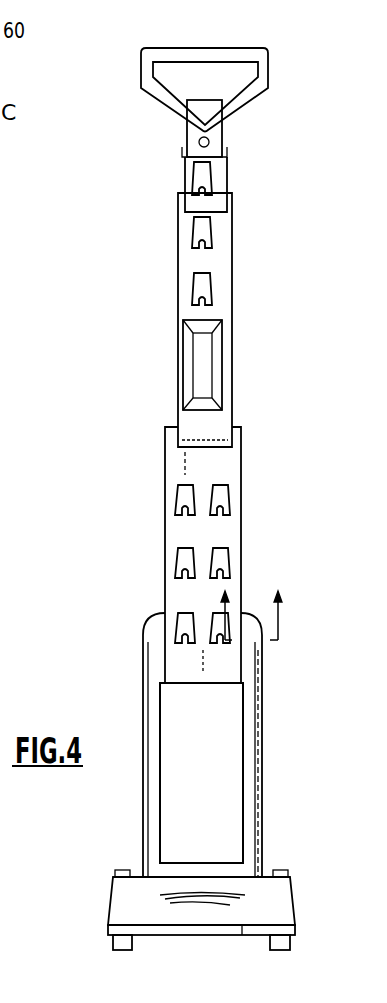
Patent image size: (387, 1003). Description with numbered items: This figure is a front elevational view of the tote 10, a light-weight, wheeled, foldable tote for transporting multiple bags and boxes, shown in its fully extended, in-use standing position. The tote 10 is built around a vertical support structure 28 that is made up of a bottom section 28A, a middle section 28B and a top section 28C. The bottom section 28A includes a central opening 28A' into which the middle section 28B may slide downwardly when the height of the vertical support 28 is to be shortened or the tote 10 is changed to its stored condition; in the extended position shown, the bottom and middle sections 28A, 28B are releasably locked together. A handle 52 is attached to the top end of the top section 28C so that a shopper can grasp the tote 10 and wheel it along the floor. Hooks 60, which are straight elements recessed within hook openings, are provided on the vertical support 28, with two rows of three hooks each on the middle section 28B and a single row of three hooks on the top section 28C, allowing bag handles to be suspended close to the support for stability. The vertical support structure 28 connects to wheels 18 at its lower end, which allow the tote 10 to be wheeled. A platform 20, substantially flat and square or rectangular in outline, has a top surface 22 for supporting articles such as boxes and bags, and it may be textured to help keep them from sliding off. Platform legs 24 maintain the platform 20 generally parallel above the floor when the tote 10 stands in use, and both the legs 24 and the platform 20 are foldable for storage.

The tote 10 is at (273, 261).
The handle 52 is at (214, 50).
The hooks 60 is at (212, 227).
The vertical support structure 28 is at (262, 743).
The top section 28C is at (232, 266).
The middle section 28B is at (241, 534).
The bottom section 28A is at (209, 745).
The central opening 28A' is at (165, 773).
The wheels 18 is at (122, 870).
The platform 20 is at (290, 900).
The top surface 22 is at (120, 907).
The platform legs 24 is at (115, 950).